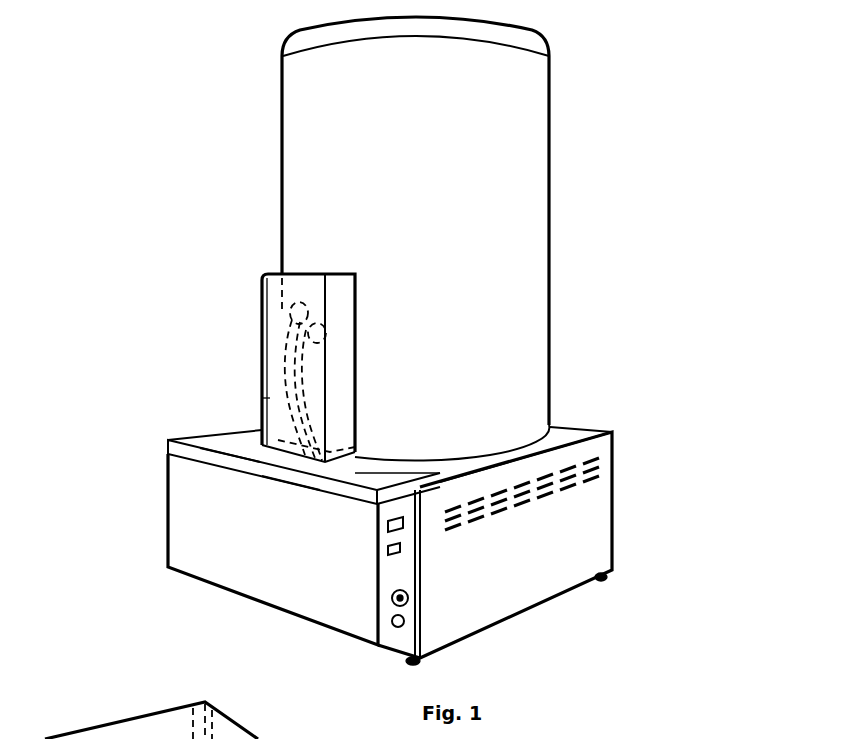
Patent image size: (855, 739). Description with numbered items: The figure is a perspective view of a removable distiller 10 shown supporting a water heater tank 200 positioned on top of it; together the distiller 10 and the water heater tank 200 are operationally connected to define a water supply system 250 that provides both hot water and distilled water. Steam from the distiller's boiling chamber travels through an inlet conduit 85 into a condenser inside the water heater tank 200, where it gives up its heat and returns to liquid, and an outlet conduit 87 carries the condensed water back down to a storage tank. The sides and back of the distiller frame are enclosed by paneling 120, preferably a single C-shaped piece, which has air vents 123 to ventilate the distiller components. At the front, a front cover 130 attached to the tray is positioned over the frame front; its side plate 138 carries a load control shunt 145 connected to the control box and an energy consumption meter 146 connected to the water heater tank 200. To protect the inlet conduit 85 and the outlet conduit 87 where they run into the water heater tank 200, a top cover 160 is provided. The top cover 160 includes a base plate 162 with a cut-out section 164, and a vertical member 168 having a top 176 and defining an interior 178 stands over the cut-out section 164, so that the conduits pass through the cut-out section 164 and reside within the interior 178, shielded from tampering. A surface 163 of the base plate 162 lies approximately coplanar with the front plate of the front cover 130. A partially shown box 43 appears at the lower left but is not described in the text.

The water supply system 250 is at (72, 103).
The water heater tank 200 is at (325, 172).
The top 176 is at (270, 275).
The interior 178 is at (265, 302).
The inlet conduit 85 is at (270, 350).
The outlet conduit 87 is at (288, 380).
The vertical member 168 is at (272, 398).
The top cover 160 is at (240, 435).
The base plate 162 is at (172, 432).
The surface 163 is at (233, 465).
The cut-out section 164 is at (300, 447).
The front cover 130 is at (295, 585).
The paneling 120 is at (565, 536).
The air vents 123 is at (560, 474).
The energy consumption meter 146 is at (405, 524).
The load control shunt 145 is at (403, 548).
The side plate 138 is at (394, 633).
The distiller 10 is at (563, 617).
The box 43 is at (88, 738).